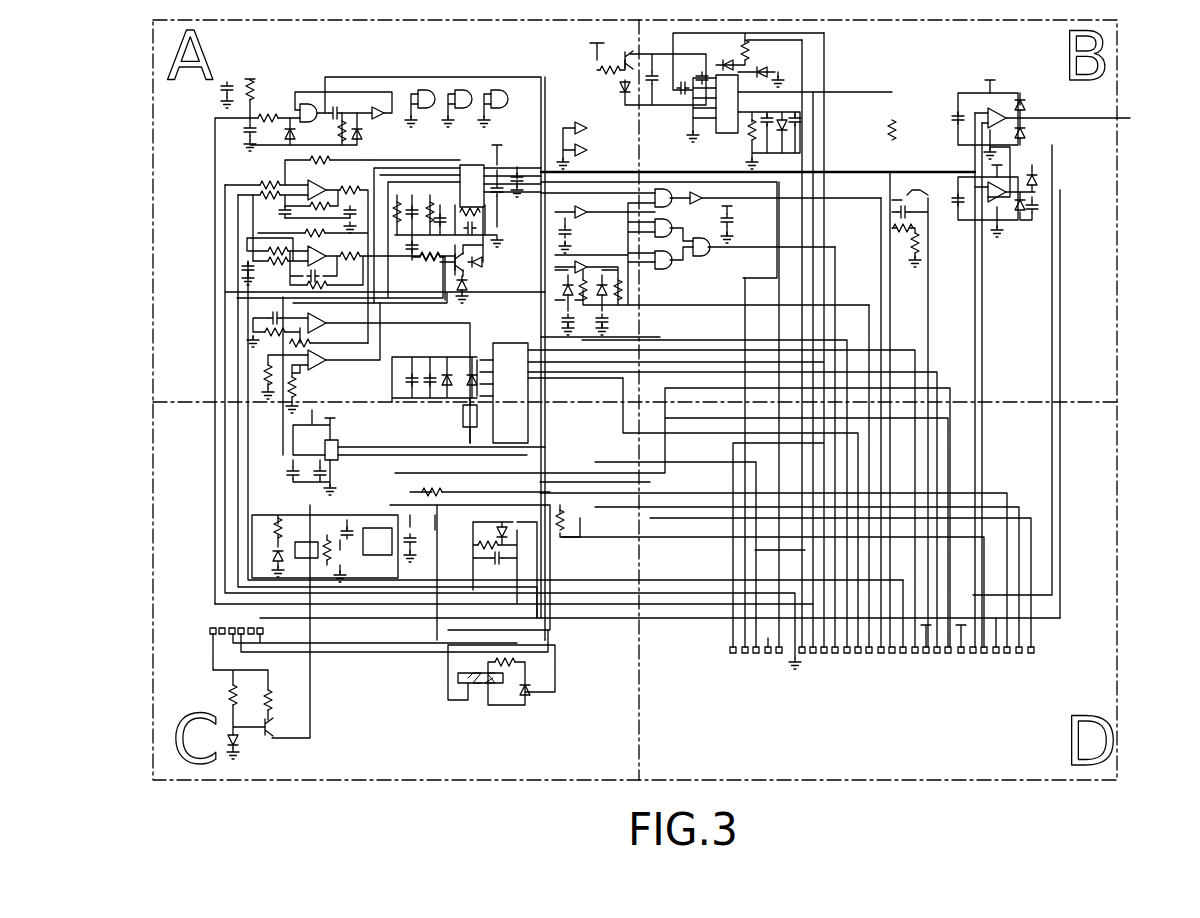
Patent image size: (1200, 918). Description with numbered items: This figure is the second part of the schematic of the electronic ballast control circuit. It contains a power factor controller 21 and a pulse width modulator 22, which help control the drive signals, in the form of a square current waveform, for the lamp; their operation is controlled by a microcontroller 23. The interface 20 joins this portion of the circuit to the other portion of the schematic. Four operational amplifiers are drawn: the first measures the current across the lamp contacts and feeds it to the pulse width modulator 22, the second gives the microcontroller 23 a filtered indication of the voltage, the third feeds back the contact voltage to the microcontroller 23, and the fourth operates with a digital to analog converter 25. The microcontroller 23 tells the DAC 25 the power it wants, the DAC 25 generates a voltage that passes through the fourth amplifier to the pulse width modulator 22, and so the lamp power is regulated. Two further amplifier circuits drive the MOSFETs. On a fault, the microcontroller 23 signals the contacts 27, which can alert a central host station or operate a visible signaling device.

The interface 20 is at (772, 656).
The power factor controller 21 is at (762, 62).
The pulse width modulator 22 is at (472, 163).
The microcontroller 23 is at (514, 343).
The digital to analog converter 25 is at (325, 448).
The contacts 27 is at (238, 628).